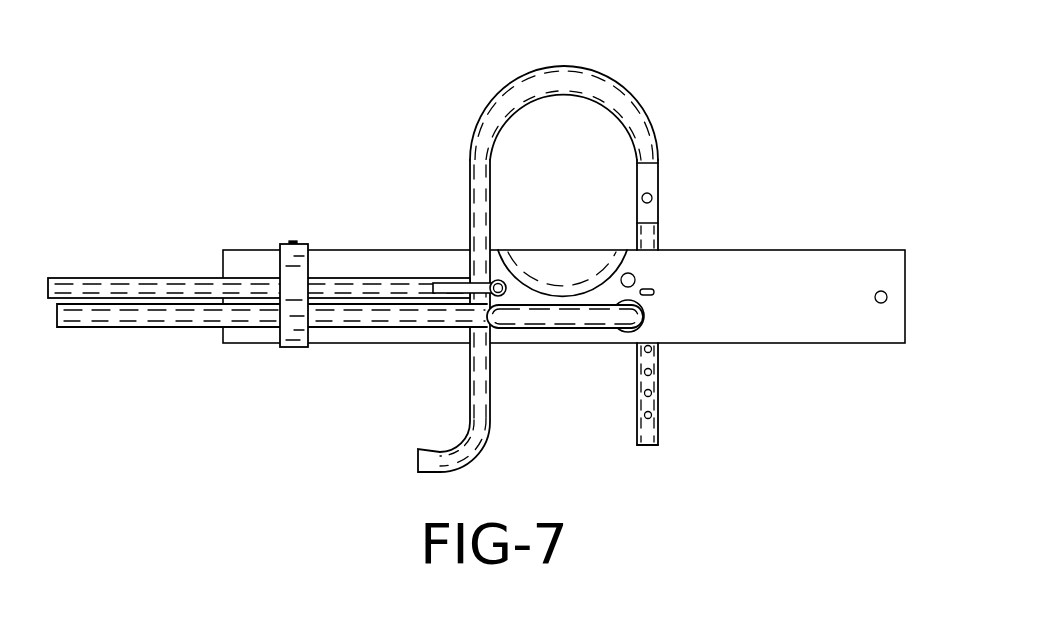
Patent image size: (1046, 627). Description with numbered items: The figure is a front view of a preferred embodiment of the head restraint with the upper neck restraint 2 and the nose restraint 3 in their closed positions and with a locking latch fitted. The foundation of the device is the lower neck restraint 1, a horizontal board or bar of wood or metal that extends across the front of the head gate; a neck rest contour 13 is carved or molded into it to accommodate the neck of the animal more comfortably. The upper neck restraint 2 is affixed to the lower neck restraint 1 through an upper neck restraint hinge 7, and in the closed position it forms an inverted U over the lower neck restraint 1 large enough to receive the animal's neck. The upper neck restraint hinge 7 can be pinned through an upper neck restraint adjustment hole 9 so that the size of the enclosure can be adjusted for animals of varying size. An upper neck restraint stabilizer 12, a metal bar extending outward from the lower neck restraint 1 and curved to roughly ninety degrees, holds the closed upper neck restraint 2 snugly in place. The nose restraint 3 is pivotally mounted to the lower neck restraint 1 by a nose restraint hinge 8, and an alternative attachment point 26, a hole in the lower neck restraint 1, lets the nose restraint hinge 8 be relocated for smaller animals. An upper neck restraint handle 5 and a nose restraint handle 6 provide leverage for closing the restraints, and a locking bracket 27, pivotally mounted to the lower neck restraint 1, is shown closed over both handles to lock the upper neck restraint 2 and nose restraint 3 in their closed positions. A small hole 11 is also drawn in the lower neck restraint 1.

The lower neck restraint 1 is at (820, 297).
The upper neck restraint 2 is at (612, 88).
The nose restraint 3 is at (555, 345).
The upper neck restraint handle 5 is at (225, 288).
The nose restraint handle 6 is at (202, 313).
The upper neck restraint hinge 7 is at (651, 196).
The nose restraint hinge 8 is at (645, 311).
The upper neck restraint adjustment hole 9 is at (652, 372).
The plate hole 11 is at (887, 298).
The upper neck restraint stabilizer 12 is at (447, 287).
The neck rest contour 13 is at (553, 267).
The alternative attachment point 26 is at (636, 280).
The locking bracket 27 is at (297, 308).